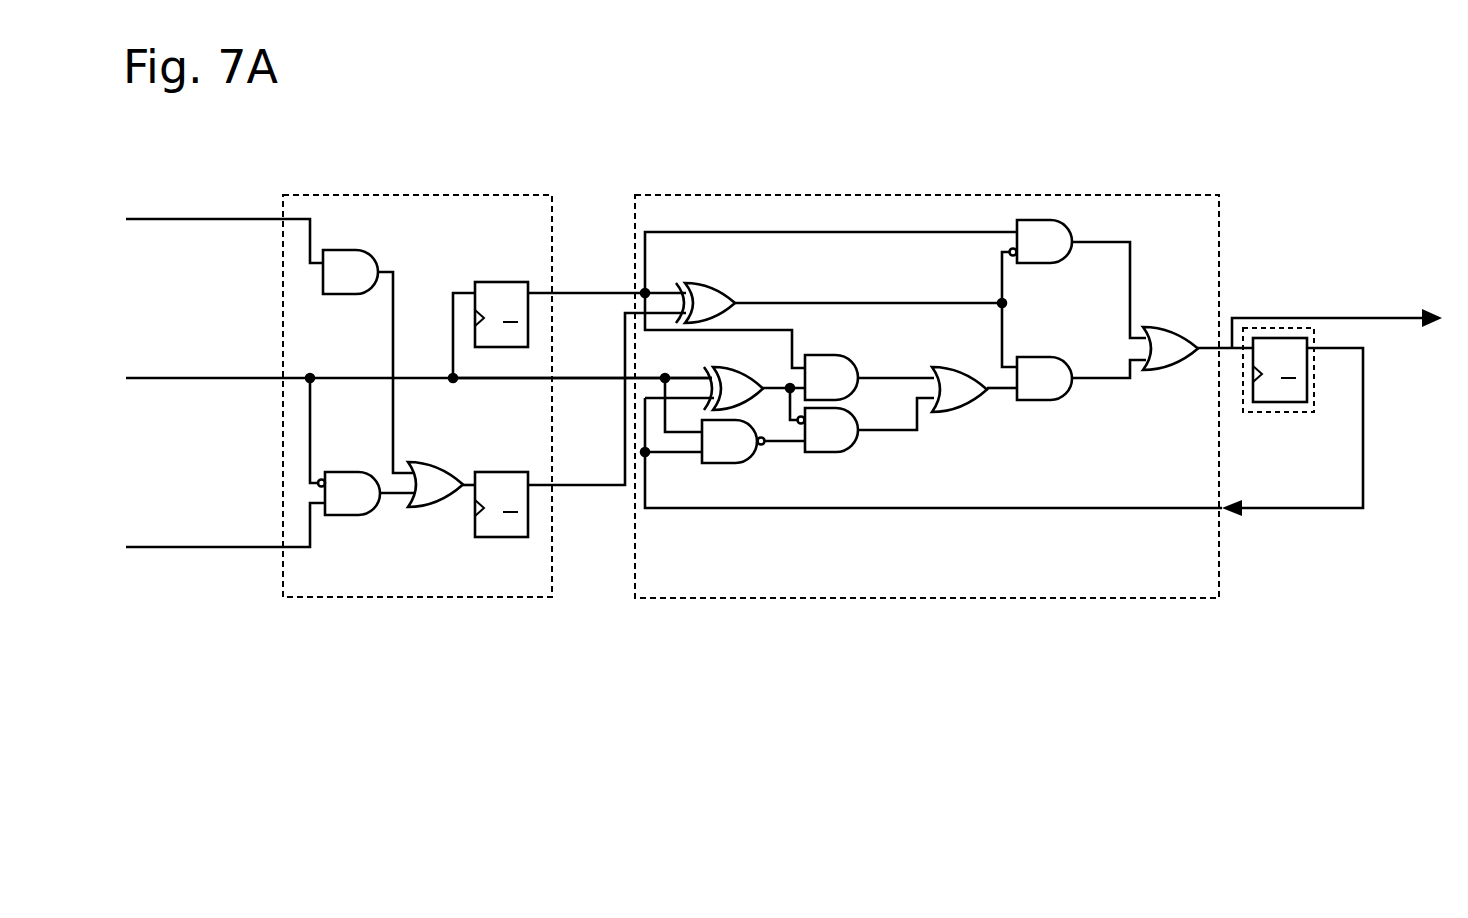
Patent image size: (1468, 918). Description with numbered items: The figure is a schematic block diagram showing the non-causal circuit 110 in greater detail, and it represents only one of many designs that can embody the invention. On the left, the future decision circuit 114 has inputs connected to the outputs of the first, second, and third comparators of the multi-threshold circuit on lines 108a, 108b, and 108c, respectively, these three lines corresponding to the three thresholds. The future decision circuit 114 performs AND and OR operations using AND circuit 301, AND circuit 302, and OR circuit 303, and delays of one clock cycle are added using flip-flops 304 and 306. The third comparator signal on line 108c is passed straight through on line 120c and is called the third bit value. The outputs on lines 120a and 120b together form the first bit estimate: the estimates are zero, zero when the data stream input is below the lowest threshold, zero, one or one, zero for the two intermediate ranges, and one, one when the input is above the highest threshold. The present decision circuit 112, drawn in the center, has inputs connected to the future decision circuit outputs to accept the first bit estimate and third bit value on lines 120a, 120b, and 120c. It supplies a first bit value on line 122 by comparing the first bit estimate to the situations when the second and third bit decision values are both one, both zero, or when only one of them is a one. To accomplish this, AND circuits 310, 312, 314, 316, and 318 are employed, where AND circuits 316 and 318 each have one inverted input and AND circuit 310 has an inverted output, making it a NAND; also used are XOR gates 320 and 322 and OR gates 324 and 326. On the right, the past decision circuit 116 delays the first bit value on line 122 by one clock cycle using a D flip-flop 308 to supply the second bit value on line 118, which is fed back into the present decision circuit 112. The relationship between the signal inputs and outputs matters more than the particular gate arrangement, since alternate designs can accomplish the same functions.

The non-causal circuit 110 is at (1322, 78).
The present decision circuit 112 is at (950, 588).
The future decision circuit 114 is at (441, 589).
The past decision circuit 116 is at (1334, 398).
The line 118 is at (1366, 453).
The line 122 is at (1326, 317).
The line 108a is at (205, 218).
The line 108b is at (205, 546).
The line 108c is at (205, 377).
The line 120a is at (570, 292).
The line 120b is at (573, 488).
The line 120c is at (488, 380).
The AND circuit 301 is at (345, 252).
The AND circuit 302 is at (345, 516).
The OR circuit 303 is at (452, 452).
The flip-flop 304 is at (503, 281).
The flip-flop 306 is at (510, 471).
The D flip-flop 308 is at (1285, 413).
The AND circuit 310 is at (727, 464).
The AND circuit 312 is at (829, 453).
The AND circuit 314 is at (826, 355).
The AND circuit 316 is at (1042, 264).
The AND circuit 318 is at (1045, 358).
The XOR gate 320 is at (715, 290).
The XOR gate 322 is at (756, 361).
The OR gate 324 is at (975, 361).
The OR gate 326 is at (1194, 328).